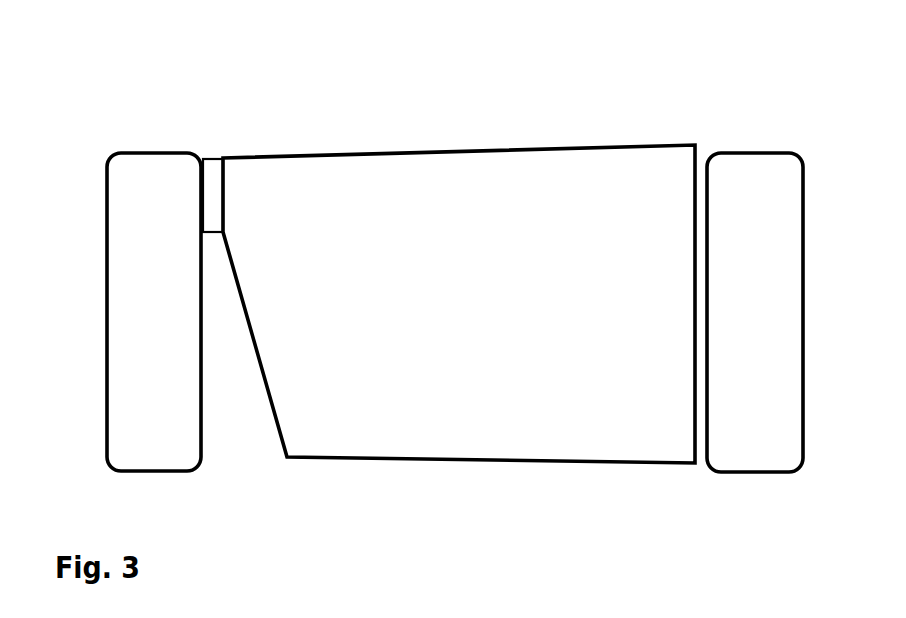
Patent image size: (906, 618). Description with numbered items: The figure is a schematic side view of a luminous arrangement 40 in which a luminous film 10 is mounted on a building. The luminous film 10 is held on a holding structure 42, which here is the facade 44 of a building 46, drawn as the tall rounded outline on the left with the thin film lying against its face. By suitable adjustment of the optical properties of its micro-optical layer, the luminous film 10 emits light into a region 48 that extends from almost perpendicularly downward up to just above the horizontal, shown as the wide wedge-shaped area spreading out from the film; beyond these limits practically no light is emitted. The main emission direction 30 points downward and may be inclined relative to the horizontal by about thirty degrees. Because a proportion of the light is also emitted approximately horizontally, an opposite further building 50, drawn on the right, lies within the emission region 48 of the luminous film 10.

The luminous film 10 is at (210, 181).
The main emission direction 30 is at (242, 195).
The luminous arrangement 40 is at (275, 94).
The holding structure 42 is at (180, 245).
The facade 44 is at (200, 280).
The building 46 is at (140, 181).
The region 48 is at (584, 412).
The further building 50 is at (768, 181).